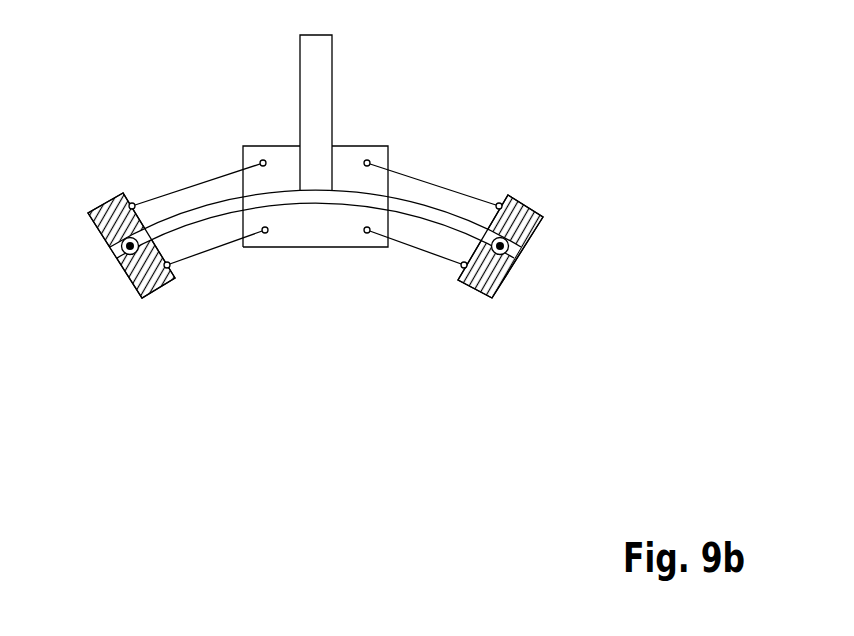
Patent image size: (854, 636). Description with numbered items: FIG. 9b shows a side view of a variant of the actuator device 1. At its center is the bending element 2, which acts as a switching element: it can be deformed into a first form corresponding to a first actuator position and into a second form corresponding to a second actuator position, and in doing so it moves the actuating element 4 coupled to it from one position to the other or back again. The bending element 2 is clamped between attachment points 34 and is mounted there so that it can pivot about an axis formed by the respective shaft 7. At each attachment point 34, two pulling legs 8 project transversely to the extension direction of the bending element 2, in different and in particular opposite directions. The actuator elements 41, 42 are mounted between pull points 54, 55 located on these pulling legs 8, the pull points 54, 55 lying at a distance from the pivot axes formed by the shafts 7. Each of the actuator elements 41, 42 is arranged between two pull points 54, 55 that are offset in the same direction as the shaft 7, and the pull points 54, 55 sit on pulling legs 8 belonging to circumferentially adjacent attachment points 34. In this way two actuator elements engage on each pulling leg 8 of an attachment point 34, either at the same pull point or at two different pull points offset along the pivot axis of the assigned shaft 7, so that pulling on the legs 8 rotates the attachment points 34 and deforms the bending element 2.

The actuator device 1 is at (578, 84).
The bending element 2 is at (420, 208).
The actuating element 4 is at (322, 56).
The shaft 7 is at (123, 267).
The pulling leg 8 is at (283, 155).
The attachment point 34 is at (110, 253).
The actuator element 41 is at (195, 186).
The actuator element 42 is at (203, 254).
The pull point 54 is at (262, 160).
The pull point 55 is at (168, 268).